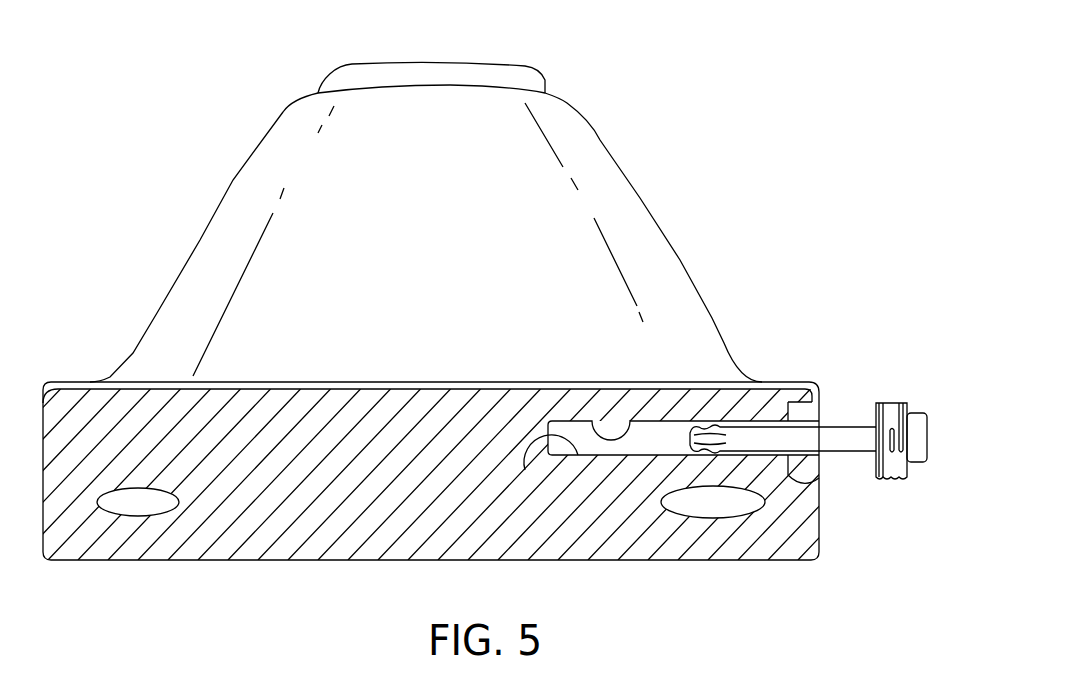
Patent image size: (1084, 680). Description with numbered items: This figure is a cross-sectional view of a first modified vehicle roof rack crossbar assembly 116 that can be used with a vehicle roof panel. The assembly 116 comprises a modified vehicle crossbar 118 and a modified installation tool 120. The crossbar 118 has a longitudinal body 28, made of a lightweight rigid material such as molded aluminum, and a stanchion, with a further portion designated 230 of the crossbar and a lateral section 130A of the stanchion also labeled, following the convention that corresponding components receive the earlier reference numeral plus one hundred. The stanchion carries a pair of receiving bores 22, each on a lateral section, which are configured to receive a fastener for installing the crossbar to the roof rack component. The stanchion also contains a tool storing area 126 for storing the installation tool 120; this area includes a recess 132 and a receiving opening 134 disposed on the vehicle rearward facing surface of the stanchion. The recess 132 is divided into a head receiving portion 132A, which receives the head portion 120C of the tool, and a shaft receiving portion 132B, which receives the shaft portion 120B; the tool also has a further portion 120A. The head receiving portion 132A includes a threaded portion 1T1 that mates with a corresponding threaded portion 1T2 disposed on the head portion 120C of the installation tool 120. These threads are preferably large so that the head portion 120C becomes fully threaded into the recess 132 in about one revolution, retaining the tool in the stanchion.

The receiving bores 22 is at (152, 504).
The longitudinal body 28 is at (352, 64).
The first modified vehicle roof rack crossbar assembly 116 is at (838, 76).
The vehicle crossbar 118 is at (681, 96).
The installation tool 120 is at (811, 427).
The threaded end of fastener 120A is at (695, 428).
The shaft portion 120B is at (852, 452).
The head portion 120C is at (927, 428).
The tool storing area 126 is at (859, 371).
The cover plate 130A is at (73, 381).
The recess 132 is at (533, 458).
The head receiving portion 132A is at (803, 466).
The shaft receiving portion 132B is at (590, 420).
The receiving opening 134 is at (819, 415).
The dome 230 is at (223, 197).
The threaded portion 1T1 is at (758, 400).
The corresponding threaded portion 1T2 is at (895, 402).